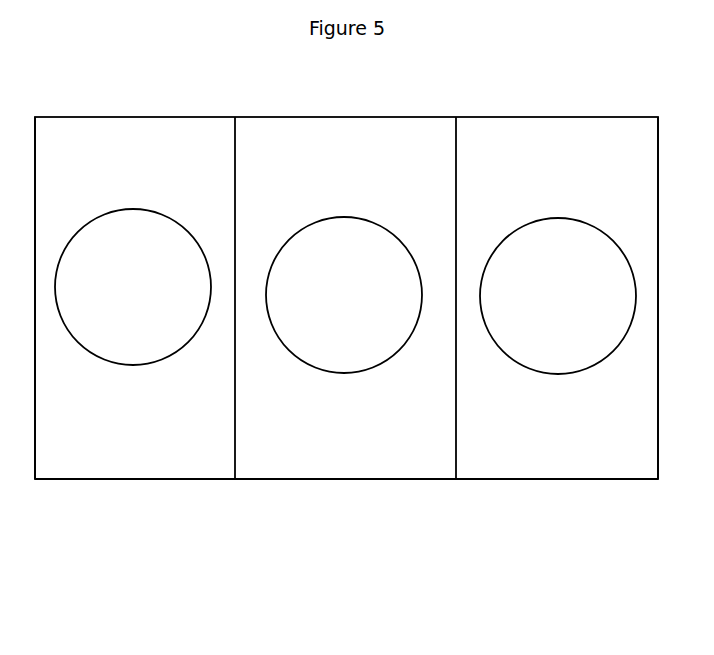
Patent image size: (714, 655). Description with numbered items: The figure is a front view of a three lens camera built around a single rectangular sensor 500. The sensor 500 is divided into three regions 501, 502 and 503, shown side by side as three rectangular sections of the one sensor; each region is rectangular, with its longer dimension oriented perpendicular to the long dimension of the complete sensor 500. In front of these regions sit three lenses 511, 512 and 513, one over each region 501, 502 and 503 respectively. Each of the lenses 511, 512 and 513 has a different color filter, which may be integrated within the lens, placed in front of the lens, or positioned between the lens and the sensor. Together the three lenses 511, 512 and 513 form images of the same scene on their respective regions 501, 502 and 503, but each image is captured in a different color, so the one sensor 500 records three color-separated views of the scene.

The rectangular sensor 500 is at (152, 480).
The first sensor region 501 is at (190, 440).
The second sensor region 502 is at (355, 440).
The third sensor region 503 is at (558, 440).
The first lens 511 is at (150, 258).
The second lens 512 is at (359, 255).
The third lens 513 is at (575, 253).